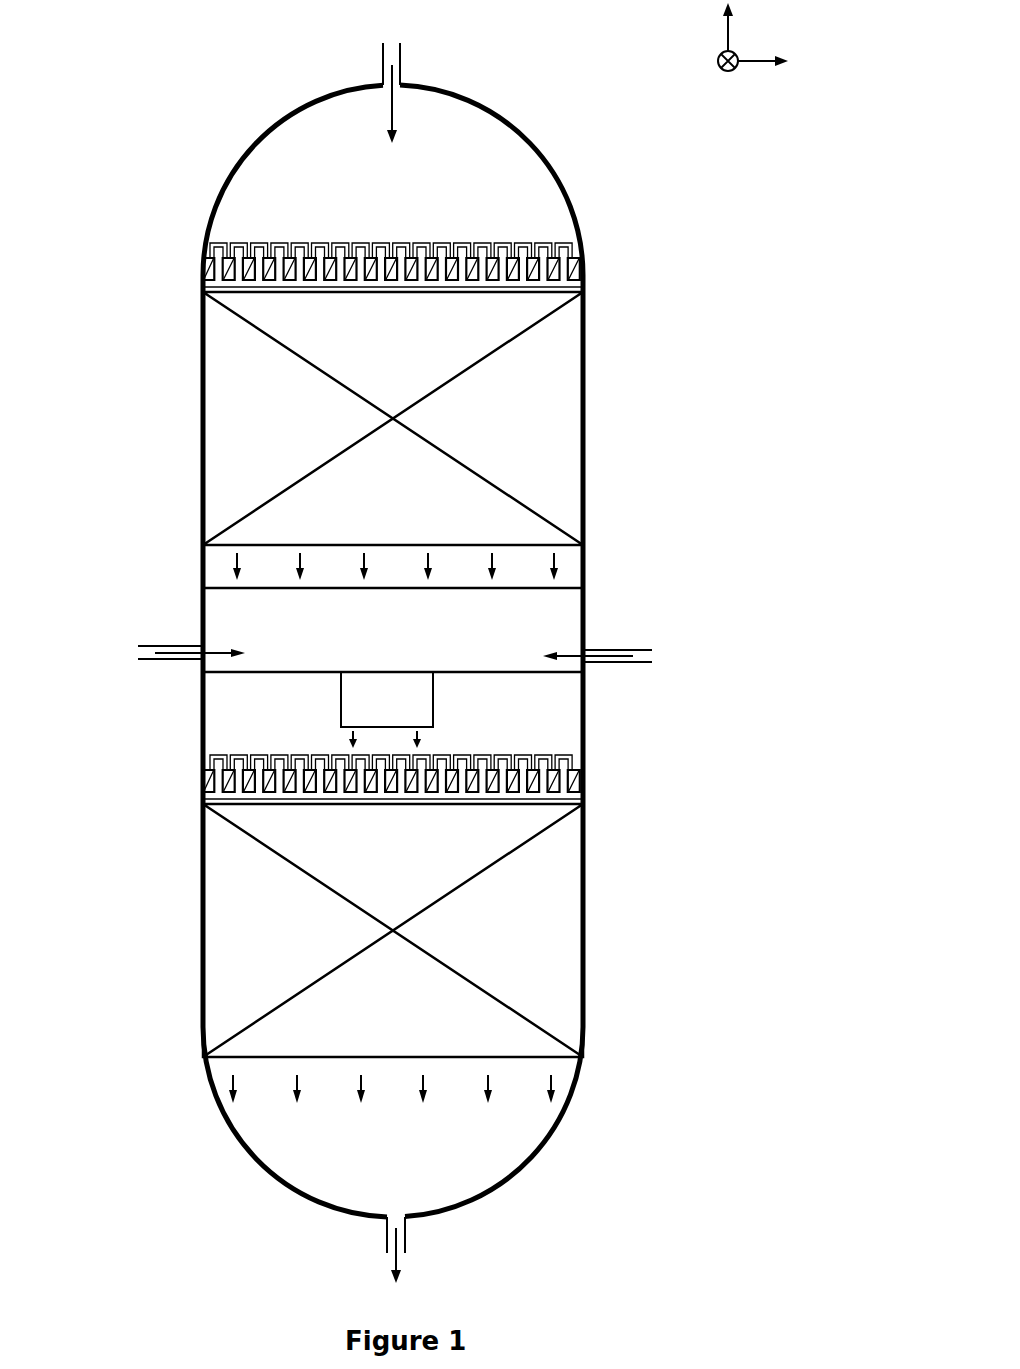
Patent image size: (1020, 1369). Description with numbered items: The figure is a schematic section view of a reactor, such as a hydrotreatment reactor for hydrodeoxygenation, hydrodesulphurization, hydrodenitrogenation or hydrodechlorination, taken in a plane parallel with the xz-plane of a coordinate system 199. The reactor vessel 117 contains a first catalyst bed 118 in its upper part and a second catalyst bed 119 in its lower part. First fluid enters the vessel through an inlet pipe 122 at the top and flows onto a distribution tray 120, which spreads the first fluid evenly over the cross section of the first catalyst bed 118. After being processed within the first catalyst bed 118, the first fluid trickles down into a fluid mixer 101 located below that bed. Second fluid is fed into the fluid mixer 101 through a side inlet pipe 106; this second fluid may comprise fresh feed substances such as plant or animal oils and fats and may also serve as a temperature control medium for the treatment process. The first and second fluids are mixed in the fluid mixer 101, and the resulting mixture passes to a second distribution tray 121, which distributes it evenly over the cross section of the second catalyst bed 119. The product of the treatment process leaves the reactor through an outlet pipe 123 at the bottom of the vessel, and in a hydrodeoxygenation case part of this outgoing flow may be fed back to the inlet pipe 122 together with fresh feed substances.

The fluid mixer 101 is at (550, 624).
The inlet pipe 106 is at (167, 662).
The reactor vessel 117 is at (558, 180).
The first catalyst bed 118 is at (238, 388).
The second catalyst bed 119 is at (233, 906).
The distribution tray 120 is at (583, 265).
The distribution tray 121 is at (578, 778).
The inlet pipe 122 is at (402, 62).
The outlet pipe 123 is at (407, 1239).
The coordinate system 199 is at (787, 41).